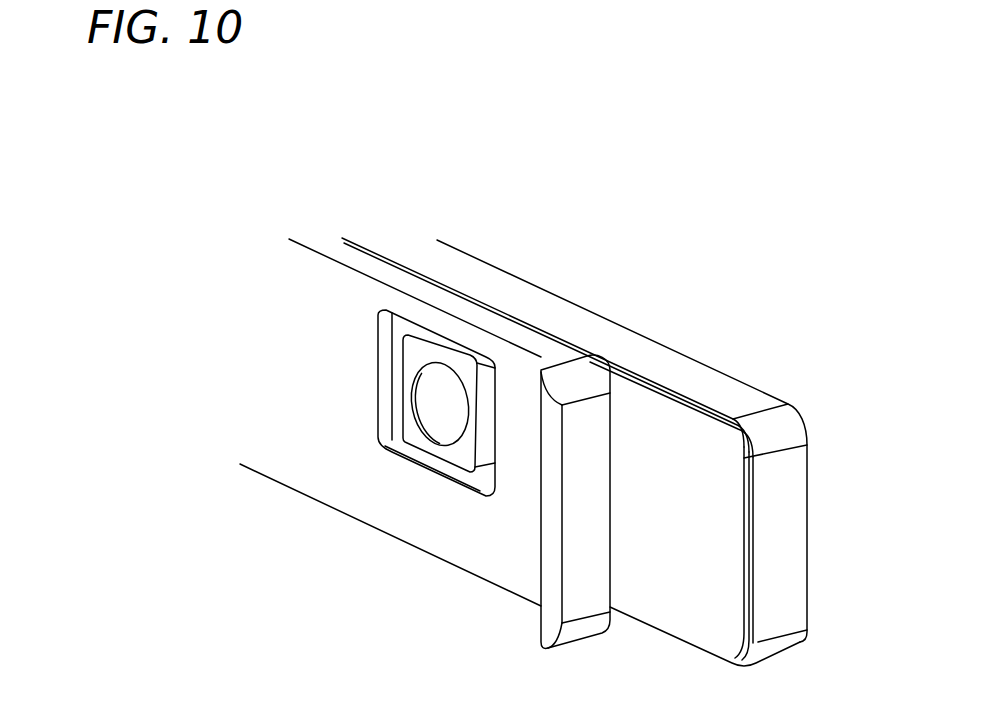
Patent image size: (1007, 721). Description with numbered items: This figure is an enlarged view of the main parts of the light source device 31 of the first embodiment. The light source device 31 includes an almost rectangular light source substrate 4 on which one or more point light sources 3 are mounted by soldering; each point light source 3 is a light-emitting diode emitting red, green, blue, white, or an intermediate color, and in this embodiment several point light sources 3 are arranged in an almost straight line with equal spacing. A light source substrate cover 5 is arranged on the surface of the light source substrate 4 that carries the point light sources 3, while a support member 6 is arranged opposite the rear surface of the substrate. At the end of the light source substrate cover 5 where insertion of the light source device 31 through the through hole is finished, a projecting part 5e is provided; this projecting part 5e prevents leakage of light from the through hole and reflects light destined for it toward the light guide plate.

The light source device 31 is at (778, 294).
The light source substrate cover 5 is at (327, 295).
The projecting part 5e is at (670, 350).
The support member 6 is at (550, 320).
The point light source 3 is at (439, 355).
The light source substrate 4 is at (588, 482).